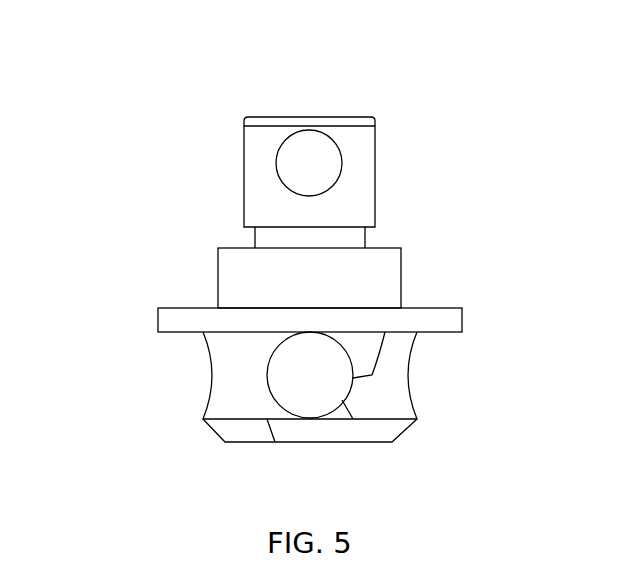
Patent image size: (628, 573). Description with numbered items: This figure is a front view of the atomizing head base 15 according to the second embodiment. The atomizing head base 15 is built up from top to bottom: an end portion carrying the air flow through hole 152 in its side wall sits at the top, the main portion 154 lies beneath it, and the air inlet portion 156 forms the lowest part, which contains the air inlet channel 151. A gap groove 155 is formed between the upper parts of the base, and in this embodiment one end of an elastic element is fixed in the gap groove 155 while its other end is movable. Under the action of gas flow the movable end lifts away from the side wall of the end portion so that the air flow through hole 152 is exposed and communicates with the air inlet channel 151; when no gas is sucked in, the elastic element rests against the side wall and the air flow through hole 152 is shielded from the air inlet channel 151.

The atomizing head base 15 is at (462, 308).
The air inlet channel 151 is at (310, 375).
The air flow through hole 152 is at (309, 163).
The main portion 154 is at (240, 290).
The gap groove 155 is at (252, 240).
The air inlet portion 156 is at (235, 382).